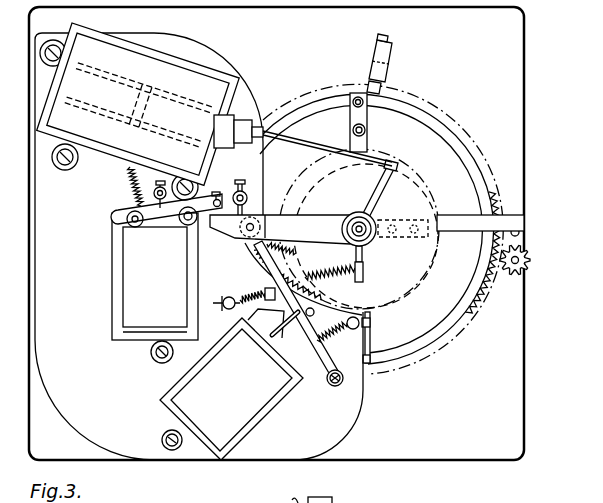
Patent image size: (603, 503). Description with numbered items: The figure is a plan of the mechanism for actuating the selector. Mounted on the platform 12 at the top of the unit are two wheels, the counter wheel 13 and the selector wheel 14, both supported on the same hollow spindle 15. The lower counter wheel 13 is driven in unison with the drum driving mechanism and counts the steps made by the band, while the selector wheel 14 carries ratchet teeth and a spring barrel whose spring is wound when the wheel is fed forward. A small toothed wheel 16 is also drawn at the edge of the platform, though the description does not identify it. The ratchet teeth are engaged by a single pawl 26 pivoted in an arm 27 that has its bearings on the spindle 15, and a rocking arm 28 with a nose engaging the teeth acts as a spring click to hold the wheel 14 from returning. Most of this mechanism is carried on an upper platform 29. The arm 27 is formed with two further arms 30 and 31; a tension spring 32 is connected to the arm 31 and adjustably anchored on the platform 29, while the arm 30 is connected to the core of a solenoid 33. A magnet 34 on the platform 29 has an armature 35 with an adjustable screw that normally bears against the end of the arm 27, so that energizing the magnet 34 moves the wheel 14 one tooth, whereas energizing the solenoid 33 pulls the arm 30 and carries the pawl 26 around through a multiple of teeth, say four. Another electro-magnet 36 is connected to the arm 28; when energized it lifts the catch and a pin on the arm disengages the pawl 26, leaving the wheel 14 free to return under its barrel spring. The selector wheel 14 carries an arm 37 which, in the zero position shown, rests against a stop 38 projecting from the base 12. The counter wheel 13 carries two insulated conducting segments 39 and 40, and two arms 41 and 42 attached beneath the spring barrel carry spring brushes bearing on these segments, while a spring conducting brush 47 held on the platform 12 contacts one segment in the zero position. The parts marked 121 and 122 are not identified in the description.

The platform 12 is at (525, 108).
The counter wheel 13 is at (486, 300).
The selector wheel 14 is at (406, 298).
The hollow spindle 15 is at (375, 228).
The pinion gear 16 is at (530, 262).
The pawl 26 is at (260, 268).
The arm 27 is at (322, 220).
The rocking arm 28 is at (289, 318).
The upper platform 29 is at (350, 413).
The arm 30 is at (378, 187).
The arm 31 is at (364, 273).
The tension spring 32 is at (342, 273).
The solenoid 33 is at (200, 82).
The magnet 34 is at (128, 262).
The armature 35 is at (168, 223).
The electro-magnet 36 is at (182, 390).
The arm 37 is at (477, 222).
The stop 38 is at (520, 232).
The conducting segment 39 is at (302, 110).
The conducting segment 40 is at (443, 128).
The arm 41 is at (372, 338).
The arm 42 is at (366, 121).
The spring conducting brush 47 is at (385, 88).
The contact 121 is at (352, 502).
The contact 122 is at (296, 502).